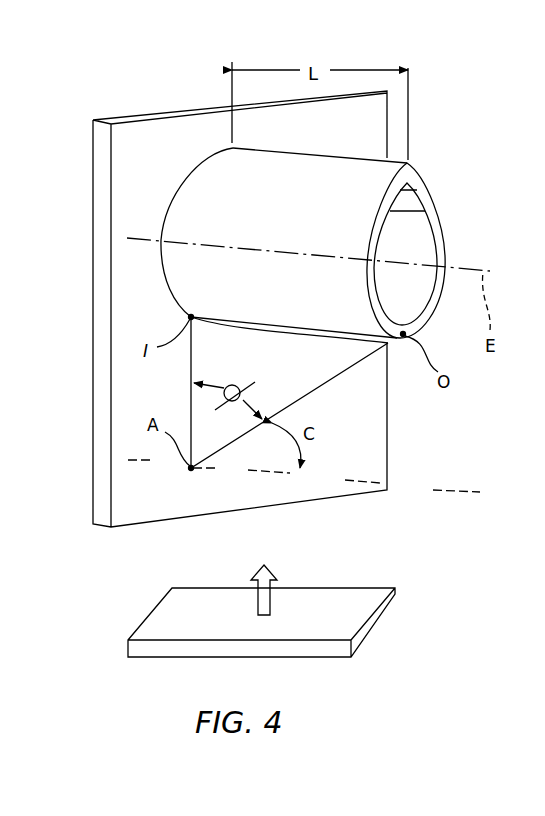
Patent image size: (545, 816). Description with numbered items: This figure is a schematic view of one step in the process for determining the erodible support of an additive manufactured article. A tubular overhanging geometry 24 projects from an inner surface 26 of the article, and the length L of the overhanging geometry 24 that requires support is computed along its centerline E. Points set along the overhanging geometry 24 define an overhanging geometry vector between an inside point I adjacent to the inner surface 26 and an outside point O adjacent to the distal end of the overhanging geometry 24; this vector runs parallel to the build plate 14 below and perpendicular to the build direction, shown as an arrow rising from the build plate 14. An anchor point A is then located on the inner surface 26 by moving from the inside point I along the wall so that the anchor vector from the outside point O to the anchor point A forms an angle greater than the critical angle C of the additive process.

The inner surface 26 is at (124, 152).
The overhanging geometry 24 is at (280, 172).
The build plate 14 is at (412, 490).